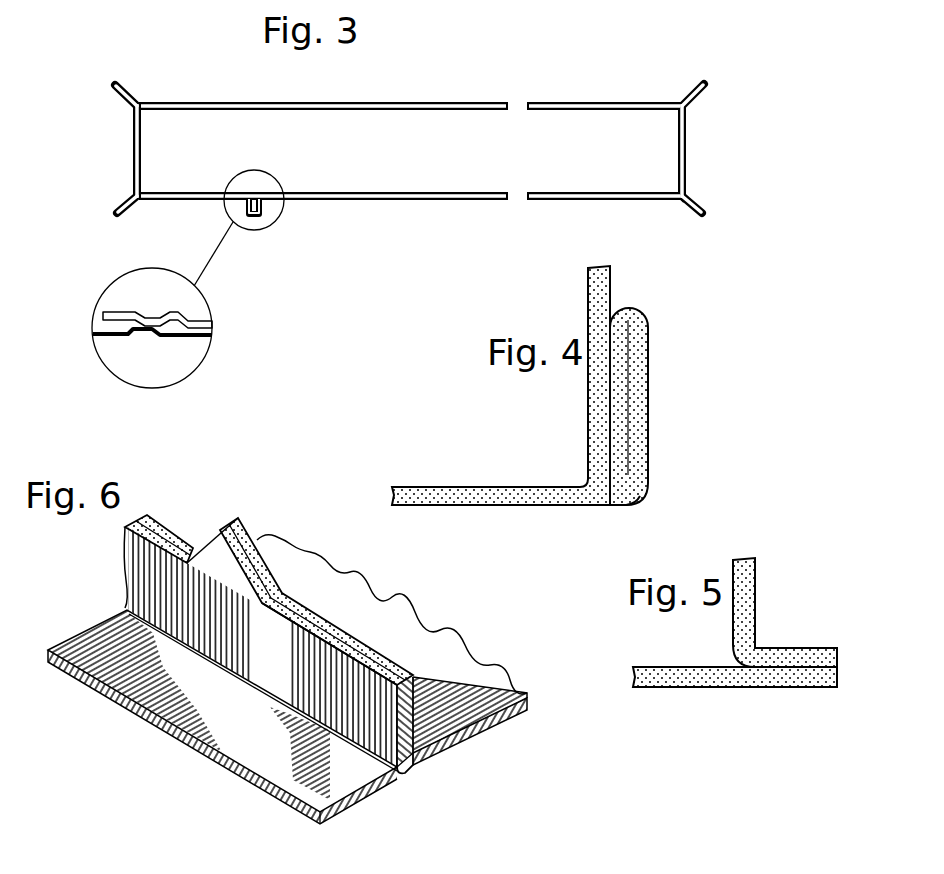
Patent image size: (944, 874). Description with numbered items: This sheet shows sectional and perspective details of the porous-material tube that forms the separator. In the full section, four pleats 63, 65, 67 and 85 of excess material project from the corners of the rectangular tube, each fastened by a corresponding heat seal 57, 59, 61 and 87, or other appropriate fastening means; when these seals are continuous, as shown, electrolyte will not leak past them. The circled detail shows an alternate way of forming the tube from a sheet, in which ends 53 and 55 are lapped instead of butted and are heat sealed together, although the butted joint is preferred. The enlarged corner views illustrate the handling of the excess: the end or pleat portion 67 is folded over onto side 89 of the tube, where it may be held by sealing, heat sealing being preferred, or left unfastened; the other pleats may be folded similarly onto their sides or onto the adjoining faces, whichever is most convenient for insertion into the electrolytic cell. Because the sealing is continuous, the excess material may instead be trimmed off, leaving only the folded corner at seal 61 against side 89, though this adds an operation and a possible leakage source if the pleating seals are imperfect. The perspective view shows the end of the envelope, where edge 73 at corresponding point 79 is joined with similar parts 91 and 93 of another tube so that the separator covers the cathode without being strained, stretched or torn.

In FIG. 3, the end 53 is at (246, 207).
In FIG. 3, the end 55 is at (275, 211).
In FIG. 3, the heat seal 57 is at (140, 103).
In FIG. 3, the heat seal 59 is at (680, 103).
In FIG. 3, the heat seal 61 is at (690, 197).
In FIG. 4, the heat seal 61 is at (645, 486).
In FIG. 5, the heat seal 61 is at (800, 688).
In FIG. 3, the pleat 63 is at (126, 86).
In FIG. 3, the pleat 65 is at (700, 84).
In FIG. 3, the pleat 67 is at (710, 212).
In FIG. 4, the pleat 67 is at (650, 350).
In FIG. 6, the edge 73 is at (288, 612).
In FIG. 6, the point 79 is at (240, 566).
In FIG. 3, the pleat 85 is at (131, 212).
In FIG. 3, the heat seal 87 is at (130, 193).
In FIG. 3, the side 89 is at (688, 150).
In FIG. 4, the side 89 is at (612, 290).
In FIG. 5, the side 89 is at (757, 594).
In FIG. 6, the part 91 is at (165, 525).
In FIG. 6, the part 93 is at (240, 522).